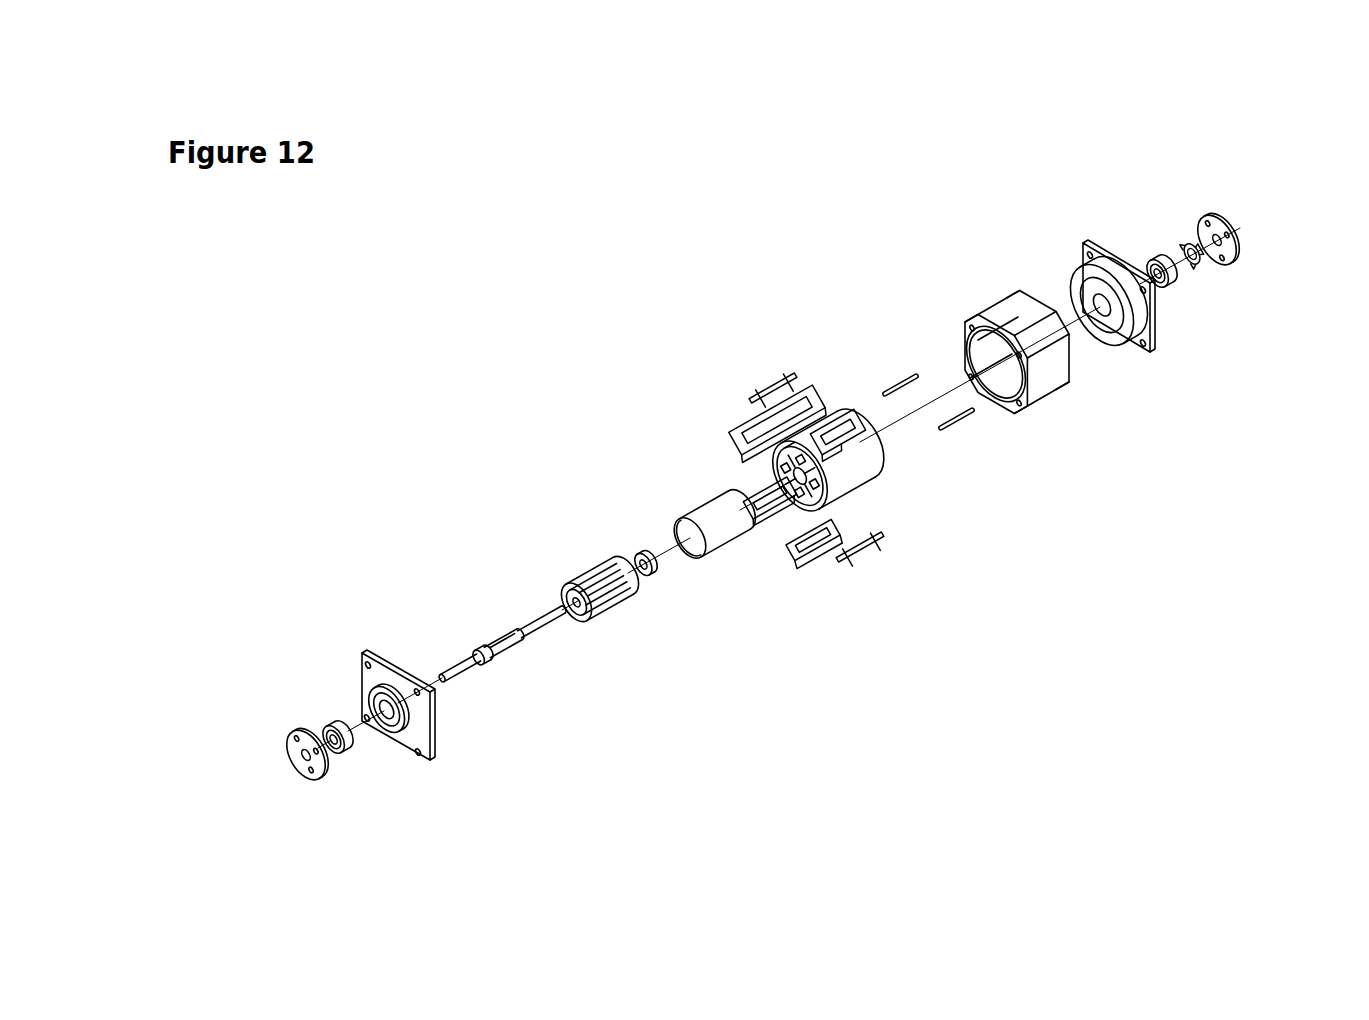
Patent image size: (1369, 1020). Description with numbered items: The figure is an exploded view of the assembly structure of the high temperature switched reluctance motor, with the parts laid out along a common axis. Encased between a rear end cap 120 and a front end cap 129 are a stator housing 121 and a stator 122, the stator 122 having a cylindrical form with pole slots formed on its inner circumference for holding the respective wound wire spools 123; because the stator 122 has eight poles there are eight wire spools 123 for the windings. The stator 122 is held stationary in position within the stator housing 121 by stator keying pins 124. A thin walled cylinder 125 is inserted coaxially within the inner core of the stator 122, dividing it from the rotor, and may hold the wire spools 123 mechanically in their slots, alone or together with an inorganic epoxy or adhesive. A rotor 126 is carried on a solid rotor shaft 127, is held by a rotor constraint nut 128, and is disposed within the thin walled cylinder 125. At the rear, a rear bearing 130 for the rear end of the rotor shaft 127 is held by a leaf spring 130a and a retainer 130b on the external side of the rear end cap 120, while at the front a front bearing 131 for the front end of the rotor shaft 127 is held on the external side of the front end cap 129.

The rear end cap 120 is at (1147, 360).
The stator housing 121 is at (1044, 406).
The stator 122 is at (854, 499).
The wire spools 123 is at (757, 385).
The stator keying pins 124 is at (960, 426).
The thin walled cylinder 125 is at (700, 500).
The rotor 126 is at (621, 608).
The rotor shaft 127 is at (478, 640).
The rotor constraint nut 128 is at (640, 548).
The front end cap 129 is at (363, 650).
The rear bearing 130 is at (1154, 254).
The leaf spring 130a is at (1182, 232).
The retainer 130b is at (1200, 212).
The front bearing 131 is at (330, 722).